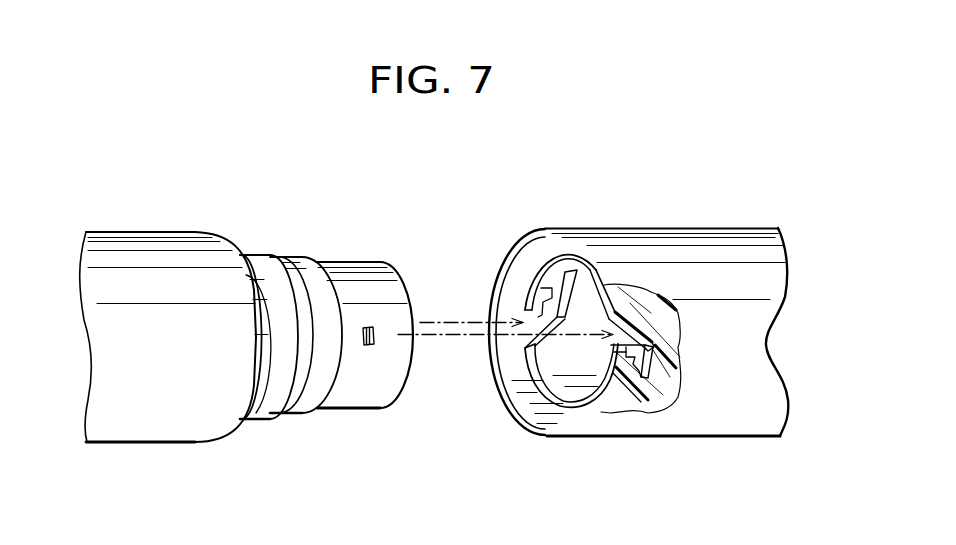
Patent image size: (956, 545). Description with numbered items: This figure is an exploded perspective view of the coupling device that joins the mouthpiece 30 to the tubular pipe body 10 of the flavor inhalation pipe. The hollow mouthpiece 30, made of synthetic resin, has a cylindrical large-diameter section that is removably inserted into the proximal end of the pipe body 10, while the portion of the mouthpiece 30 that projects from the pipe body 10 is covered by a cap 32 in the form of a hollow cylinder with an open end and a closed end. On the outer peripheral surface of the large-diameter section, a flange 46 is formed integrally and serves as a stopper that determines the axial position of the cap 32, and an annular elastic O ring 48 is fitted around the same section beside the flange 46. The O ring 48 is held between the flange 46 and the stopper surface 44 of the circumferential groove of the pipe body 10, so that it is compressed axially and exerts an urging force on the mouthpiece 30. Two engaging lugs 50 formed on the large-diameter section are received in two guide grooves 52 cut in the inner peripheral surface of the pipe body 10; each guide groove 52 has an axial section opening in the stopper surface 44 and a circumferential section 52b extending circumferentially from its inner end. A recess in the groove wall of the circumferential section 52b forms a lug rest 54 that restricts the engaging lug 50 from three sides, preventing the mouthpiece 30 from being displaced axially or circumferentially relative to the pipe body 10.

The pipe body 10 is at (733, 228).
The mouthpiece 30 is at (350, 393).
The cap 32 is at (132, 232).
The stopper surface 44 is at (566, 272).
The flange 46 is at (265, 252).
The O ring 48 is at (288, 254).
The engaging lug 50 is at (371, 347).
The guide groove 52 is at (526, 300).
The circumferential section 52b is at (598, 276).
The lug rest 54 is at (541, 288).